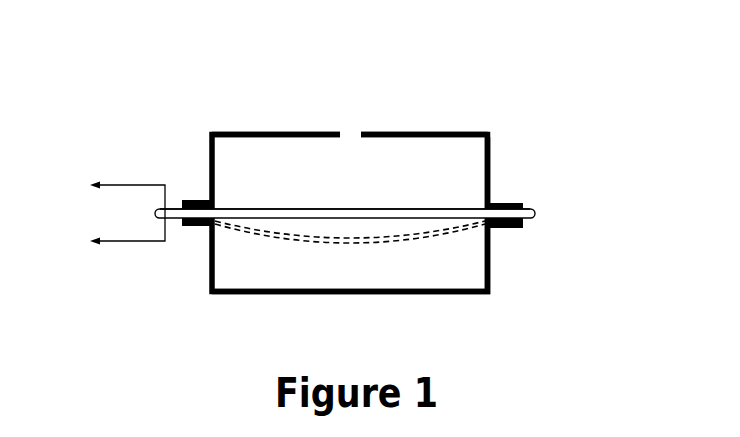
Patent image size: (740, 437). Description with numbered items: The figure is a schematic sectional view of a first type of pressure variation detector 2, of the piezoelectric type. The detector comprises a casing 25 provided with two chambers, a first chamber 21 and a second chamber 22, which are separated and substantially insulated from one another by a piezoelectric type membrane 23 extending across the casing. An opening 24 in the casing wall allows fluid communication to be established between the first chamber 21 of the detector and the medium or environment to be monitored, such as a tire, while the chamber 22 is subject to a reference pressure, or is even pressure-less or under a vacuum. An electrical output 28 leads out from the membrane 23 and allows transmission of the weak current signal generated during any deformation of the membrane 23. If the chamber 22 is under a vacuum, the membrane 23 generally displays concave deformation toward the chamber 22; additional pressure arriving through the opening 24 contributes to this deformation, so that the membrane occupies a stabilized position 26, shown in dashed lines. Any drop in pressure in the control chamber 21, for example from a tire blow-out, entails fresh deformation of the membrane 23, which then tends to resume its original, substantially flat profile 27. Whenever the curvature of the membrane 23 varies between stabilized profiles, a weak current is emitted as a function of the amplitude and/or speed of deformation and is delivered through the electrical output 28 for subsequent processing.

The pressure variation detector 2 is at (209, 163).
The first chamber 21 is at (270, 168).
The second chamber 22 is at (260, 268).
The piezoelectric membrane 23 is at (387, 212).
The opening 24 is at (353, 132).
The casing 25 is at (462, 296).
The stabilized position of the membrane 26 is at (437, 241).
The original profile of the membrane 27 is at (439, 204).
The electrical output 28 is at (157, 218).